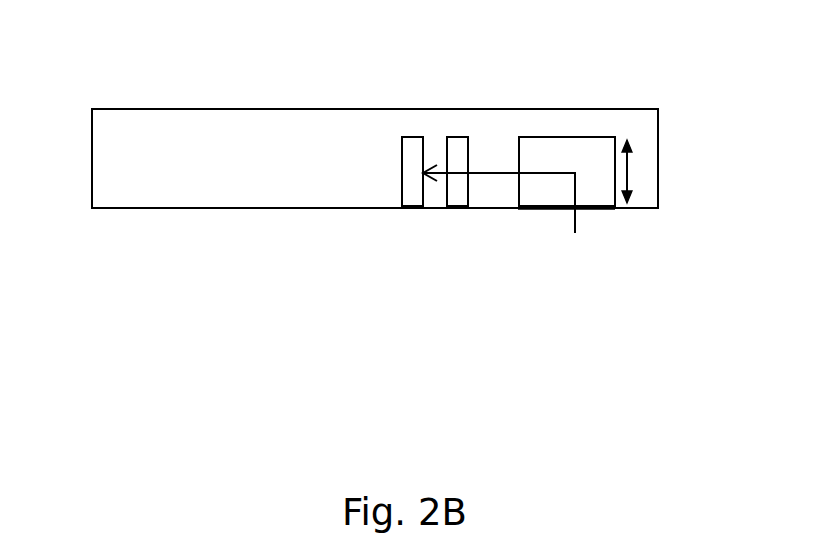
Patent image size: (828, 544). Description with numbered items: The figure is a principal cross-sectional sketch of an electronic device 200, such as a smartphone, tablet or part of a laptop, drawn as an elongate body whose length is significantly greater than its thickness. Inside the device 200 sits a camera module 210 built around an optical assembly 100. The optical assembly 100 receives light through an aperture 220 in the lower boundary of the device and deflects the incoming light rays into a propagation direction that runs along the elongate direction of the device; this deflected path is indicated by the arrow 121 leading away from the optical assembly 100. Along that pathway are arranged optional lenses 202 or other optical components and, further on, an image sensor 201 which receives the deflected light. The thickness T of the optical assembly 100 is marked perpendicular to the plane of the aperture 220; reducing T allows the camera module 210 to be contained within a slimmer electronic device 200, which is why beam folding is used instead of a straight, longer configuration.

The electronic device 200 is at (274, 102).
The image sensor 201 is at (406, 145).
The lenses 202 is at (453, 145).
The optical assembly 100 is at (578, 152).
The line / lead 121 is at (568, 223).
The aperture 220 is at (597, 210).
The camera module 210 is at (407, 256).
The thickness of the optical assembly T is at (636, 171).